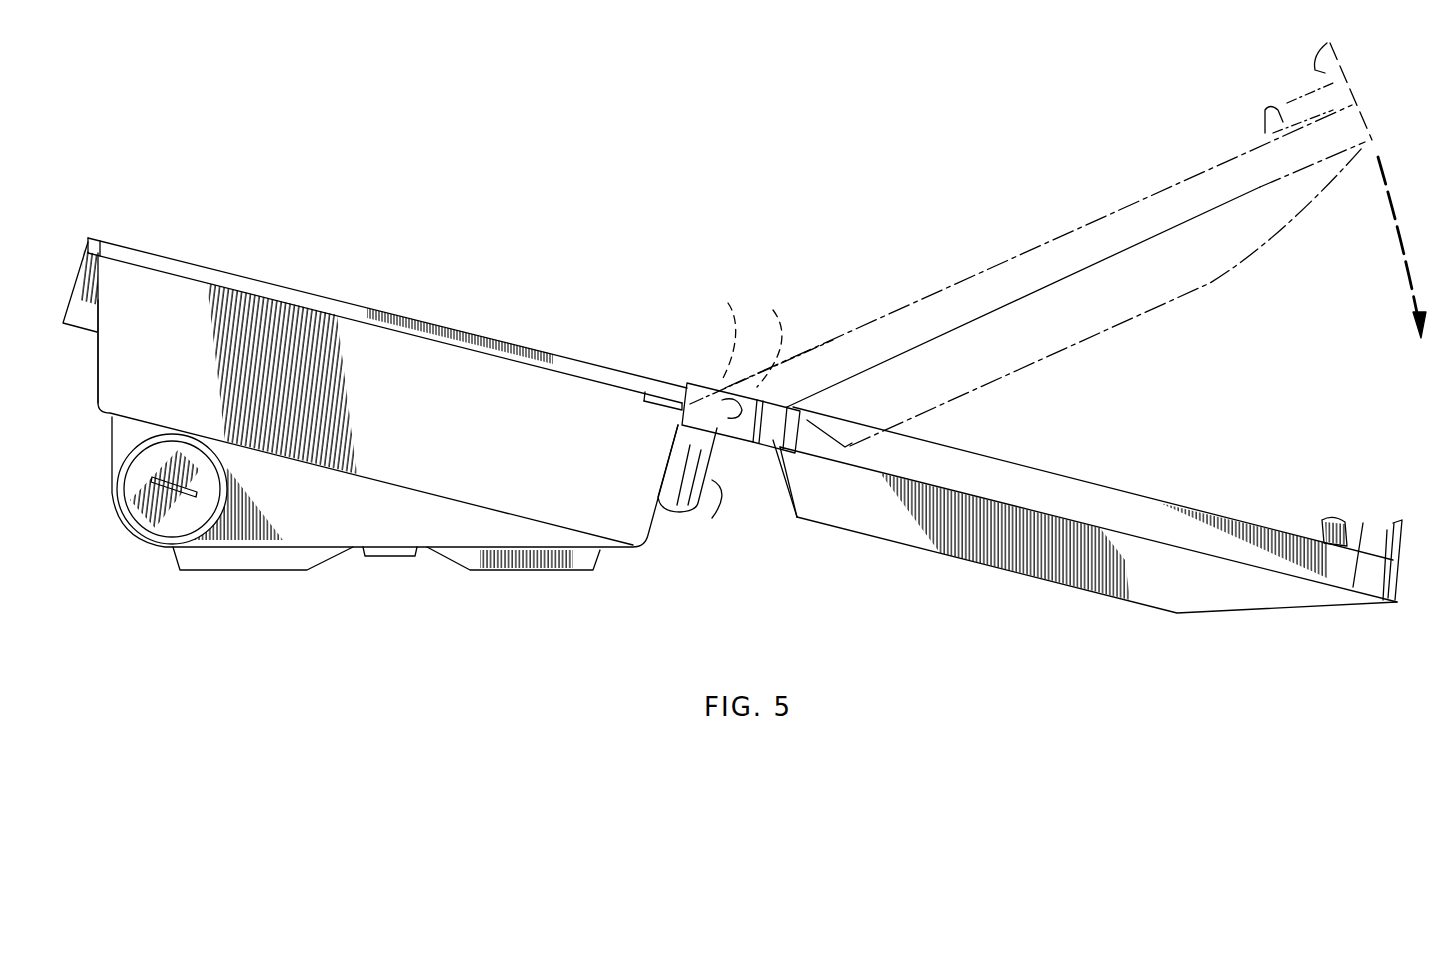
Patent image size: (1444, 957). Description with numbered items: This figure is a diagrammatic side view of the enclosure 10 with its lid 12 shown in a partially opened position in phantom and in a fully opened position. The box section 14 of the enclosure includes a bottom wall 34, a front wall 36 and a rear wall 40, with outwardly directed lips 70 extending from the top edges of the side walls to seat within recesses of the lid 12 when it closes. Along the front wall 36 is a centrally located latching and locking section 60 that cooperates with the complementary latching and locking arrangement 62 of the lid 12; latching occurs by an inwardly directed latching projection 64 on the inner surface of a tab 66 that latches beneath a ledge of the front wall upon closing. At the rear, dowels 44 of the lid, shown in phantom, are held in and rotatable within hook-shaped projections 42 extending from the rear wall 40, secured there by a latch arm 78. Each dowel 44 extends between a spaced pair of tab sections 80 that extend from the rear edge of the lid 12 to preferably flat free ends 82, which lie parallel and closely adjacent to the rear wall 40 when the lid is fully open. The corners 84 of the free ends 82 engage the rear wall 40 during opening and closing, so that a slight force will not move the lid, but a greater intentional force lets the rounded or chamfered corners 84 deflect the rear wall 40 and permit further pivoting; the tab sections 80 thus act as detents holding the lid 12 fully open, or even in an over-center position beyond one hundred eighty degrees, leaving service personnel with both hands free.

The enclosure 10 is at (606, 158).
The lid 12 is at (1131, 478).
The box section 14 is at (494, 322).
The bottom wall 34 is at (393, 555).
The front wall 36 is at (96, 370).
The rear wall 40 is at (643, 530).
The hook-shaped projections 42 is at (715, 330).
The dowels 44 is at (769, 333).
The latching and locking section 60 is at (84, 278).
The latching and locking arrangement 62 is at (1346, 518).
The latching projection 64 is at (1393, 515).
The tab 66 is at (1414, 510).
The lips 70 is at (180, 270).
The latch arm 78 is at (718, 488).
The tab sections 80 is at (700, 384).
The free ends 82 is at (683, 400).
The corners 84 is at (690, 382).